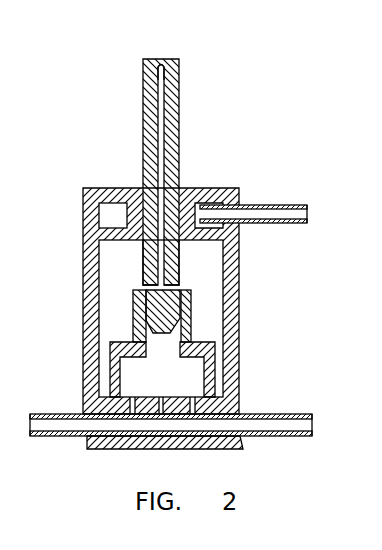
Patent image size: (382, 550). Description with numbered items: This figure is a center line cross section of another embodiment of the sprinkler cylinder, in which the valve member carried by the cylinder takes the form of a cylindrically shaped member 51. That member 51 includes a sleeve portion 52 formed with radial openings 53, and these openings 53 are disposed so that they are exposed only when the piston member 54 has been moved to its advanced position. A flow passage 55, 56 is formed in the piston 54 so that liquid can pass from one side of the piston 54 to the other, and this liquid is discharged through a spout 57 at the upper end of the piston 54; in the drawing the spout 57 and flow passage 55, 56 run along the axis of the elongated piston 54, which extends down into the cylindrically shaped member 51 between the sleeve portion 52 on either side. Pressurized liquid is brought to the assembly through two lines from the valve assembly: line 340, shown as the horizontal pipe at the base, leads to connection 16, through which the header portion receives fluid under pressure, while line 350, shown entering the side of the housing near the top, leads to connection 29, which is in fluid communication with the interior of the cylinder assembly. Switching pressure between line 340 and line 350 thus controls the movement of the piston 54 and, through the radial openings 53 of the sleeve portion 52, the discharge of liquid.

The connection 16 is at (245, 411).
The connection 29 is at (233, 190).
The cylindrically shaped member 51 is at (212, 341).
The sleeve portion 52 is at (190, 312).
The radial openings 53 is at (132, 338).
The piston member 54 is at (177, 258).
The flow passage 55 is at (180, 287).
The flow passage 56 is at (157, 138).
The spout 57 is at (162, 64).
The line 340 is at (298, 412).
The line 350 is at (276, 206).